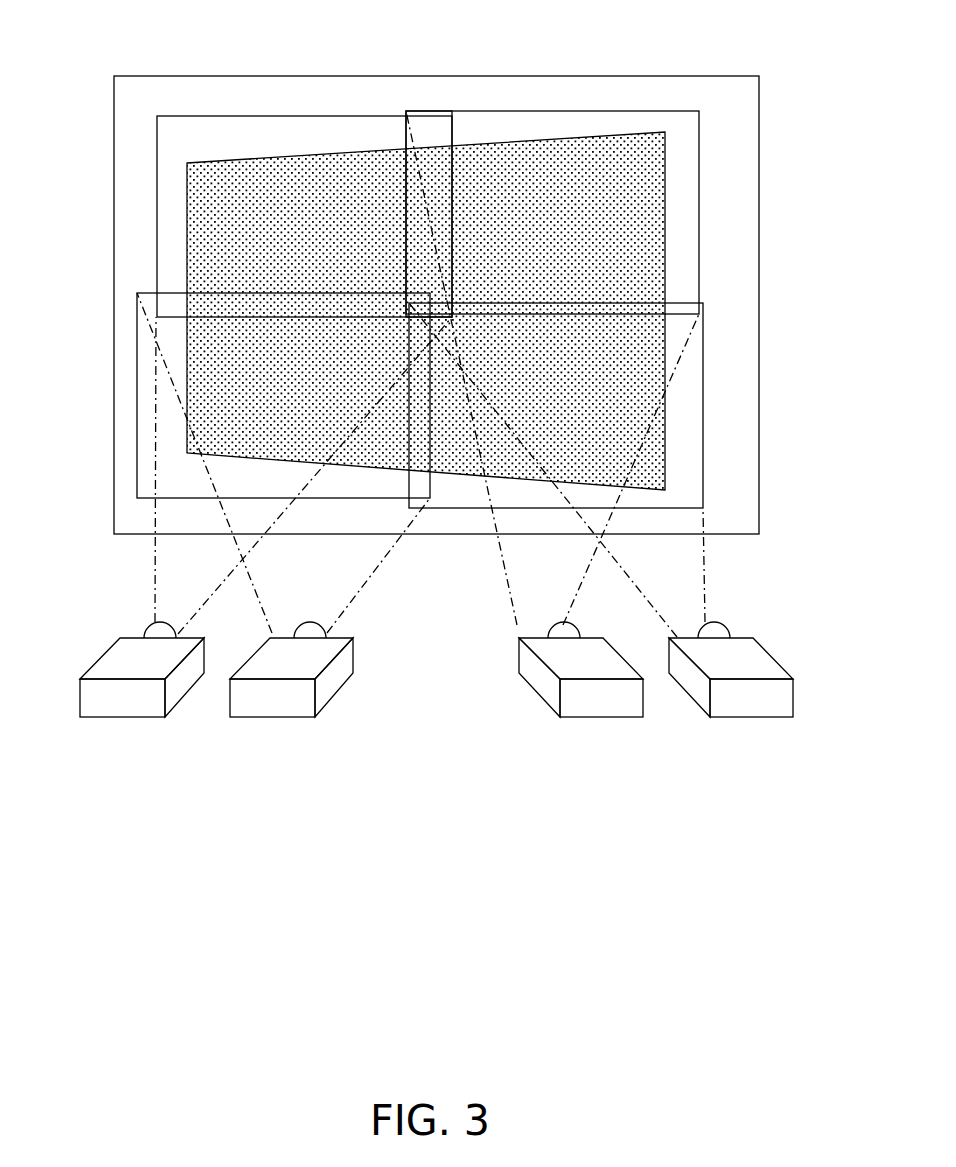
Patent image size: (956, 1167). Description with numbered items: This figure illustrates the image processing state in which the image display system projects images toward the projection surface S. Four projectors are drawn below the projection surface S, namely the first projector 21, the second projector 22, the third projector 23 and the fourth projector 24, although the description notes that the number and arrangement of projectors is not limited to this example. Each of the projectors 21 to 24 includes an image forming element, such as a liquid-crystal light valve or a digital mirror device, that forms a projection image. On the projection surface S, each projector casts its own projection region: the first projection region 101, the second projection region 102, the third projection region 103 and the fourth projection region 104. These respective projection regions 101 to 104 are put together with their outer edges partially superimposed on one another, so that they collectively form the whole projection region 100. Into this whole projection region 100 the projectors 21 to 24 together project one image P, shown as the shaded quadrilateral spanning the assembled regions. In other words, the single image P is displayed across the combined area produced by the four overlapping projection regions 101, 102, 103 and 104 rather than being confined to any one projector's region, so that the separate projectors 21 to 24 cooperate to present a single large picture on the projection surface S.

The whole projection region 100 is at (464, 110).
The first projection region 101 is at (267, 133).
The second projection region 102 is at (557, 110).
The third projection region 103 is at (147, 463).
The fourth projection region 104 is at (703, 400).
The image P is at (602, 140).
The projection surface S is at (737, 115).
The first projector 21 is at (123, 703).
The second projector 22 is at (273, 703).
The third projector 23 is at (602, 703).
The fourth projector 24 is at (752, 703).